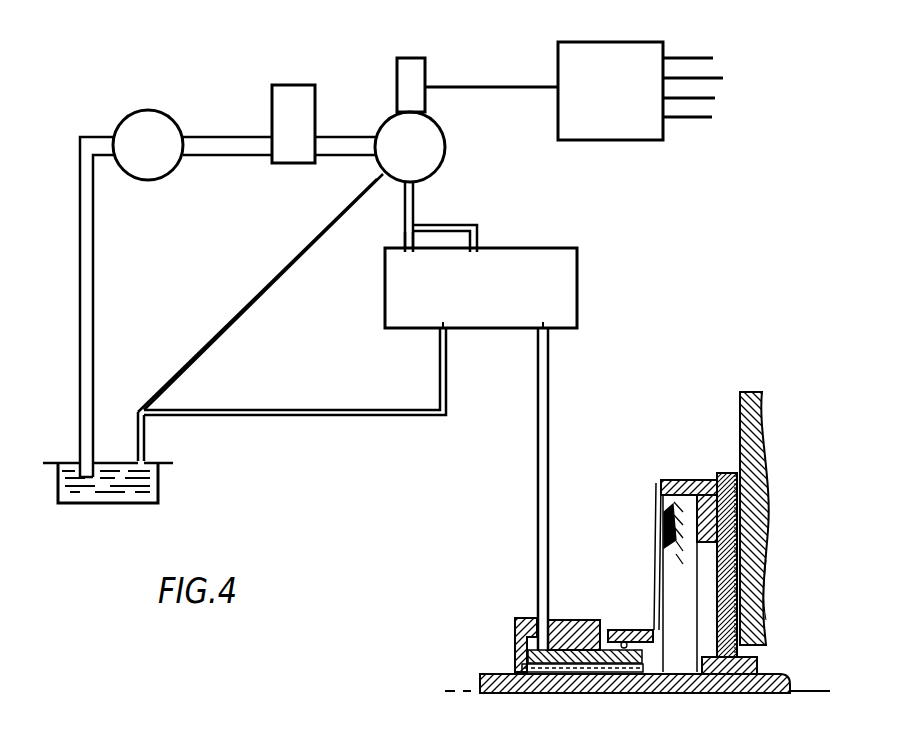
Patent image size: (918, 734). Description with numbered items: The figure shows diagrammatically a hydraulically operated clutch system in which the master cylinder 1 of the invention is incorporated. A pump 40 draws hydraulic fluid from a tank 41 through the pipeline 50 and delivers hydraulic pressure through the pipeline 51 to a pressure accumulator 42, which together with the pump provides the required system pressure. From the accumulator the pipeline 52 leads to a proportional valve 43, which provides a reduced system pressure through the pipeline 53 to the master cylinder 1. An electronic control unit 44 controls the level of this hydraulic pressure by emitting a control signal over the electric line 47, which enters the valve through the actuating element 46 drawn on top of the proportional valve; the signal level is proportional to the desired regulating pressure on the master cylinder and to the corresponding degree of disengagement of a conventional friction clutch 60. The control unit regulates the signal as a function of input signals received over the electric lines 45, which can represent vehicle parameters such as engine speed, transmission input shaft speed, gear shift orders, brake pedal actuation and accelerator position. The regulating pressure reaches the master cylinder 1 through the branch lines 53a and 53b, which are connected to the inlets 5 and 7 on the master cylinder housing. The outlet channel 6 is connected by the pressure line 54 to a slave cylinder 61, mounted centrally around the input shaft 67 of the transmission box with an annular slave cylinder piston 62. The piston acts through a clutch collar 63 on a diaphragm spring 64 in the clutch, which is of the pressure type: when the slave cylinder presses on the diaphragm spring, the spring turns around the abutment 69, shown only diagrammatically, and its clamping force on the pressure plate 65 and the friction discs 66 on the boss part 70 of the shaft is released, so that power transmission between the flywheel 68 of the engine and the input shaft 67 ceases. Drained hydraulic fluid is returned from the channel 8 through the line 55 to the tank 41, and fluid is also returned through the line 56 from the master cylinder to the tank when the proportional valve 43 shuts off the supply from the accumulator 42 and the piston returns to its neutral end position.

The master cylinder 1 is at (552, 237).
The inlet 5 is at (404, 263).
The outlet channel 6 is at (543, 312).
The inlet 7 is at (475, 263).
The channel 8 is at (440, 312).
The pump 40 is at (140, 111).
The tank 41 is at (67, 472).
The pressure accumulator 42 is at (288, 112).
The proportional valve 43 is at (446, 137).
The electronic control unit 44 is at (617, 94).
The electric lines 45 is at (735, 47).
The valve actuator 46 is at (410, 83).
The electric line 47 is at (482, 85).
The pipeline 50 is at (90, 295).
The pipeline 51 is at (215, 148).
The pipeline 52 is at (335, 148).
The pipeline 53 is at (413, 200).
The branch line 53a is at (408, 240).
The branch line 53b is at (477, 226).
The pressure line 54 is at (548, 440).
The line 55 is at (292, 414).
The line 56 is at (246, 310).
The friction clutch 60 is at (643, 476).
The slave cylinder 61 is at (508, 642).
The slave cylinder piston 62 is at (607, 630).
The clutch collar 63 is at (626, 631).
The diaphragm spring 64 is at (654, 563).
The pressure plate 65 is at (692, 479).
The friction discs 66 is at (733, 473).
The input shaft 67 is at (773, 674).
The flywheel 68 is at (752, 392).
The abutment 69 is at (679, 559).
The boss part 70 is at (763, 598).